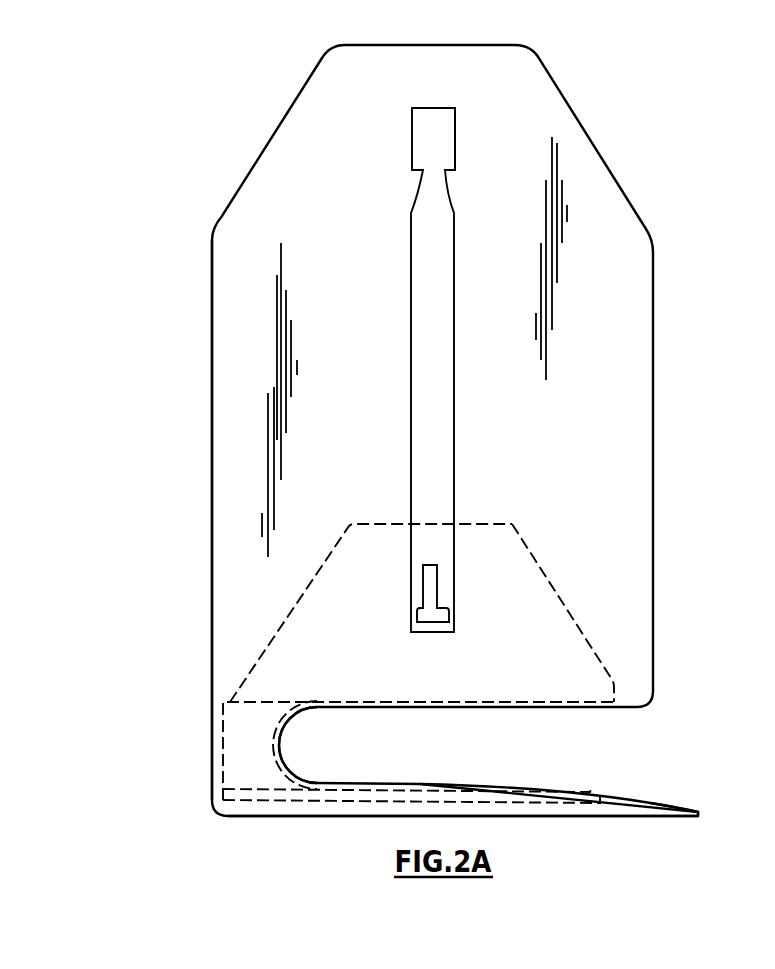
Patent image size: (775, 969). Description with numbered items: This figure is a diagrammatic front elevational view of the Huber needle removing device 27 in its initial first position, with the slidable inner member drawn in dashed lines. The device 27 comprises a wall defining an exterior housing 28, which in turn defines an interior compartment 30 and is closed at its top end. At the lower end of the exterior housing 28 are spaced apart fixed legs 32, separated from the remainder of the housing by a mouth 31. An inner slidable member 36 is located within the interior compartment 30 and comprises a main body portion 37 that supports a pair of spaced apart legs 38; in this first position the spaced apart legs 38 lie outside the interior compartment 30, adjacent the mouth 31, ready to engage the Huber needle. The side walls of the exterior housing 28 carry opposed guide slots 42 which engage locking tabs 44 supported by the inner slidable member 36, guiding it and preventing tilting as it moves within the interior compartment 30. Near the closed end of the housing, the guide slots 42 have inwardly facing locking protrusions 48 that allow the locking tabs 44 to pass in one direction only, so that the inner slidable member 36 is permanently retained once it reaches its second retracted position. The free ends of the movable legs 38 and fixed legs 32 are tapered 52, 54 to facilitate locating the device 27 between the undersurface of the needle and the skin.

The device 27 is at (192, 174).
The exterior housing 28 is at (229, 484).
The interior compartment 30 is at (551, 450).
The mouth 31 is at (668, 748).
The fixed legs 32 is at (667, 821).
The inner slidable member 36 is at (553, 586).
The main body portion 37 is at (558, 663).
The spaced apart legs 38 is at (547, 806).
The guide slots 42 is at (440, 368).
The locking tabs 44 is at (418, 619).
The locking protrusions 48 is at (420, 168).
The taper 52 is at (690, 810).
The taper 54 is at (591, 794).